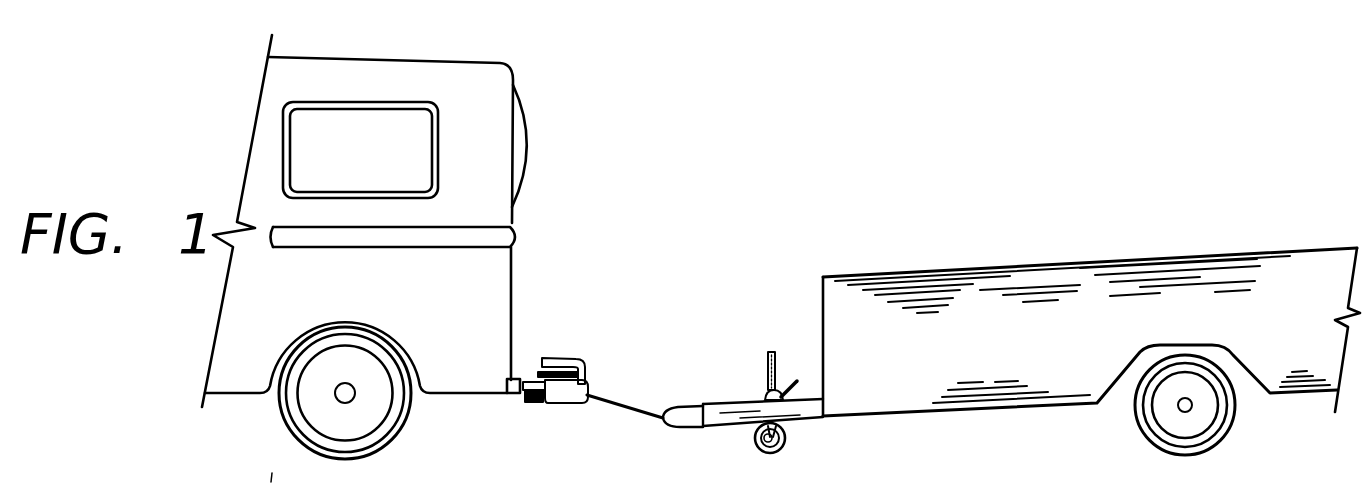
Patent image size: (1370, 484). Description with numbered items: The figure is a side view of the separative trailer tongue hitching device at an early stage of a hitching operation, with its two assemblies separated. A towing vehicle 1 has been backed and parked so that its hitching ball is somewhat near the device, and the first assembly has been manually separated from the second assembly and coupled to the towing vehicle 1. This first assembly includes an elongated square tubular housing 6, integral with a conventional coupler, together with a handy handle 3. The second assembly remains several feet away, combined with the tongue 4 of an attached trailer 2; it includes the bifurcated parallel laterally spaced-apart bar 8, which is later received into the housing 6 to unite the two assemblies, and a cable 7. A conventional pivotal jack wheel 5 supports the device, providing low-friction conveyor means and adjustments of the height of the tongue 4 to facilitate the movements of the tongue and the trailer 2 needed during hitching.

The towing vehicle 1 is at (552, 221).
The trailer 2 is at (851, 233).
The handle 3 is at (562, 360).
The tongue 4 is at (733, 410).
The pivotal jack wheel 5 is at (773, 353).
The elongated square tubular housing 6 is at (558, 403).
The cable 7 is at (615, 400).
The bar 8 is at (682, 407).